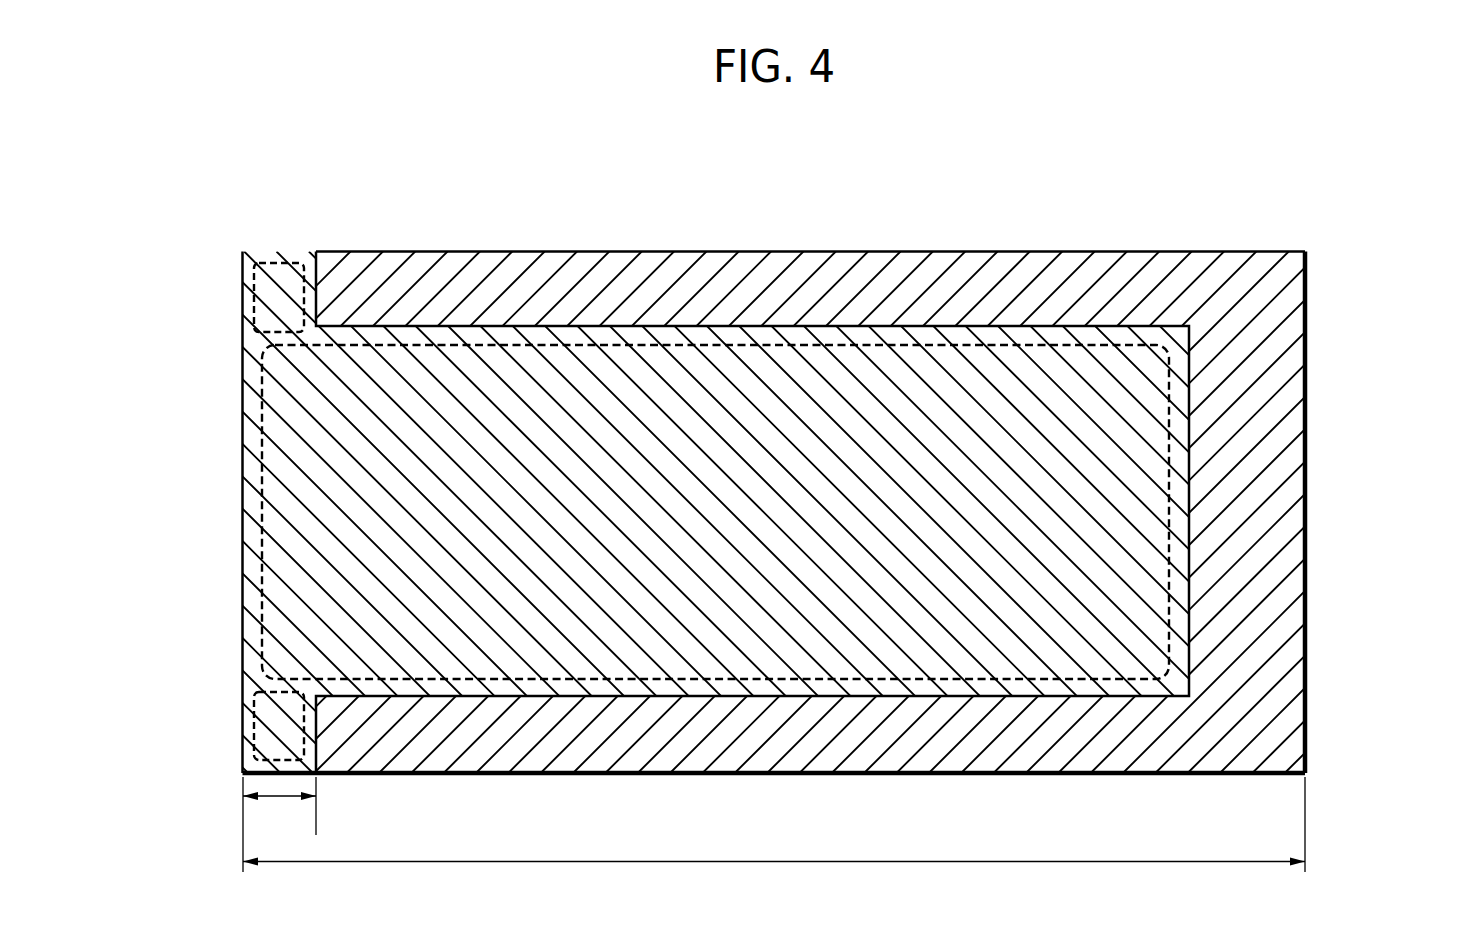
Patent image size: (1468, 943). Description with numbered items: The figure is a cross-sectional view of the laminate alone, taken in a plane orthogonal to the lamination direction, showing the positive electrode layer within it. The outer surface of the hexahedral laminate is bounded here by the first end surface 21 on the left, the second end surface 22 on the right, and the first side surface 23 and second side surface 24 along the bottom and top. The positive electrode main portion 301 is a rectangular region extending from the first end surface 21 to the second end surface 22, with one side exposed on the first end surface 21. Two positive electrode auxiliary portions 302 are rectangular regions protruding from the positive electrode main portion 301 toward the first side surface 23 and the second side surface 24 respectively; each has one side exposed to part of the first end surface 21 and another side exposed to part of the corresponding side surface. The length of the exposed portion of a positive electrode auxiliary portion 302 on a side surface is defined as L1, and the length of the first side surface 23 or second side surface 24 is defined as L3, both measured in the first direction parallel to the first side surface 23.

The first end surface 21 is at (242, 500).
The second end surface 22 is at (1307, 485).
The first side surface 23 is at (573, 777).
The second side surface 24 is at (788, 251).
The positive electrode main portion 301 is at (1170, 490).
The positive electrode auxiliary portion 302 is at (242, 300).
The length of exposed portion of positive electrode auxiliary portion L1 is at (279, 824).
The length of side surface L3 is at (774, 840).